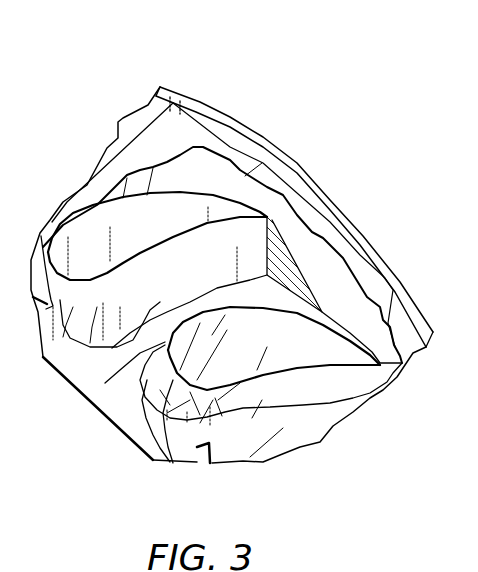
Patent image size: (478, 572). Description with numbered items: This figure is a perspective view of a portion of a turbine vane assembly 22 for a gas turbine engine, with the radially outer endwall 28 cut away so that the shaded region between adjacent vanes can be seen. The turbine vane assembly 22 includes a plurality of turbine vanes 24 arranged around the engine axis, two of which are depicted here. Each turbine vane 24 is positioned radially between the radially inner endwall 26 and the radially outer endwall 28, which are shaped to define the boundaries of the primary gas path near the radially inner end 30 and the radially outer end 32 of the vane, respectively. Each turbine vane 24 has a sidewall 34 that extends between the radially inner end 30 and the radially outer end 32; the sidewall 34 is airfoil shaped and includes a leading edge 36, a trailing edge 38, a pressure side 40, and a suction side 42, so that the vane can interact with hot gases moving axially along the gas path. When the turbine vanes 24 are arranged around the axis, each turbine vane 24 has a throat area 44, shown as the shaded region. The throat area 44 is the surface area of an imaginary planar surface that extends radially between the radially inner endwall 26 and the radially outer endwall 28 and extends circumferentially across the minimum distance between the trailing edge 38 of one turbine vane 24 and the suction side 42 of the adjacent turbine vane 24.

The turbine vane assembly 22 is at (183, 193).
The turbine vane 24 is at (253, 282).
The radially inner endwall 26 is at (111, 421).
The radially outer endwall 28 is at (107, 206).
The radially inner end 30 is at (201, 283).
The radially outer end 32 is at (197, 477).
The sidewall 34 is at (171, 396).
The leading edge 36 is at (226, 394).
The trailing edge 38 is at (247, 270).
The pressure side 40 is at (187, 356).
The suction side 42 is at (238, 213).
The throat area 44 is at (294, 217).